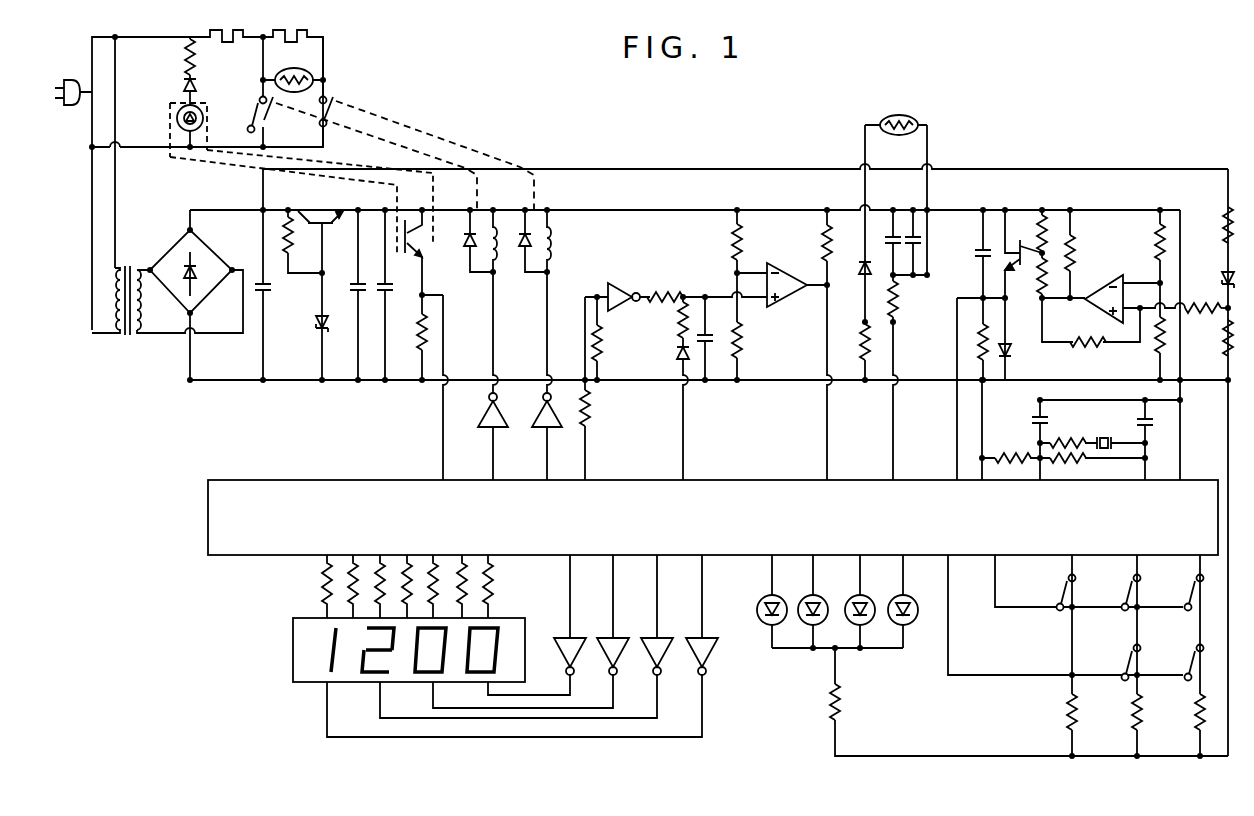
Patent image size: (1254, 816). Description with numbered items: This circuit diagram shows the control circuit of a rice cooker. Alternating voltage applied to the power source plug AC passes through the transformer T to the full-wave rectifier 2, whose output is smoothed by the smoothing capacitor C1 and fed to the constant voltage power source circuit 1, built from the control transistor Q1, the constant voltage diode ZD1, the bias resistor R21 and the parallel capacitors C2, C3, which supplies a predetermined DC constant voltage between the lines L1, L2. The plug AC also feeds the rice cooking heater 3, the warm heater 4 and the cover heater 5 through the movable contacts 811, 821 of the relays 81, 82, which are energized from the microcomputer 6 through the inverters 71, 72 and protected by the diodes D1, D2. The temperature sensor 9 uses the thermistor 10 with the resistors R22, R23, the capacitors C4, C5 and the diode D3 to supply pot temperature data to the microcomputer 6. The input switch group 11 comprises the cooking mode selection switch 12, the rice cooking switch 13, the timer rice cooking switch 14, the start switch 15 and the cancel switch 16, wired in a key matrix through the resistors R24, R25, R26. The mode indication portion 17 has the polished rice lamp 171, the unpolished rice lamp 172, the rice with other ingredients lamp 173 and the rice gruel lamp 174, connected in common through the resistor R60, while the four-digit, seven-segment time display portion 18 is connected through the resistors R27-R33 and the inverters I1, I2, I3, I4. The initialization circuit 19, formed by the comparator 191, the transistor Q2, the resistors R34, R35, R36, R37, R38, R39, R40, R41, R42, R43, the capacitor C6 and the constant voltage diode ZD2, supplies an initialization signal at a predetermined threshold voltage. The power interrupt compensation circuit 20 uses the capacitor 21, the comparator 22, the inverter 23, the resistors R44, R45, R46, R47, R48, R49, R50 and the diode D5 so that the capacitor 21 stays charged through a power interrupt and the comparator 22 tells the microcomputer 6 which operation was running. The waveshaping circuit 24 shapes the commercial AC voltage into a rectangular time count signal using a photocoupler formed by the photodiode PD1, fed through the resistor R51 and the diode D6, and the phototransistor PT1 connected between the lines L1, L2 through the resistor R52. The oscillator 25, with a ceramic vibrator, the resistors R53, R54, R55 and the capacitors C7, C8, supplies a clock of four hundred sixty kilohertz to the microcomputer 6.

The constant voltage power source circuit 1 is at (292, 358).
The full-wave rectifier 2 is at (172, 256).
The rice cooking heater 3 is at (226, 48).
The warm heater 4 is at (263, 44).
The cover heater 5 is at (312, 78).
The microcomputer 6 is at (207, 519).
The temperature sensor 9 is at (944, 187).
The thermistor 10 is at (906, 115).
The input switch group 11 is at (1050, 690).
The cooking mode selection switch 12 is at (1060, 593).
The rice cooking switch 13 is at (1124, 593).
The timer rice cooking switch 14 is at (1124, 663).
The start switch 15 is at (1187, 663).
The cancel switch 16 is at (1187, 593).
The mode indication portion 17 is at (810, 655).
The time display portion 18 is at (292, 676).
The initialization circuit 19 is at (1117, 200).
The power interrupt compensation circuit 20 is at (710, 240).
The capacitor 21 is at (708, 348).
The comparator 22 is at (795, 298).
The inverter 23 is at (620, 284).
The waveshaping circuit 24 is at (230, 168).
The oscillator 25 is at (1034, 412).
The inverter 71 is at (483, 415).
The inverter 72 is at (540, 415).
The relay 81 is at (487, 258).
The relay 82 is at (552, 256).
The movable contact 811 is at (261, 115).
The movable contact 821 is at (340, 99).
The polished rice cooking mode indication lamp 171 is at (907, 628).
The unpolished rice cooking mode indication lamp 172 is at (868, 600).
The rice with other ingredients cooking mode indication lamp 173 is at (822, 600).
The rice gruel cooking mode indication lamp 174 is at (758, 600).
The comparator 191 is at (1091, 306).
The power source plug AC is at (64, 108).
The transformer T is at (128, 338).
The resistor R51 is at (184, 55).
The diode D6 is at (183, 88).
The photodiode PD1 is at (176, 118).
The smoothing capacitor C1 is at (257, 280).
The bias resistor R21 is at (287, 258).
The control transistor Q1 is at (326, 242).
The line L1 is at (360, 207).
The line L2 is at (368, 382).
The constant voltage diode ZD1 is at (320, 336).
The capacitor C2 is at (354, 288).
The capacitor C3 is at (397, 292).
The phototransistor PT1 is at (422, 245).
The resistor R52 is at (417, 352).
The protective diode D1 is at (465, 239).
The protective diode D2 is at (516, 256).
The resistor R44 is at (590, 412).
The resistor R45 is at (616, 338).
The resistor R46 is at (707, 285).
The resistor R47 is at (678, 320).
The diode D5 is at (676, 354).
The resistor R48 is at (743, 235).
The resistor R49 is at (742, 352).
The resistor R50 is at (822, 244).
The resistor R22 is at (858, 341).
The diode D3 is at (858, 280).
The capacitor C4 is at (886, 230).
The capacitor C5 is at (920, 241).
The capacitor C6 is at (977, 253).
The resistor R23 is at (901, 298).
The resistor R34 is at (978, 346).
The transistor Q2 is at (1017, 239).
The resistor R35 is at (1047, 226).
The resistor R36 is at (1036, 293).
The resistor R37 is at (1076, 254).
The resistor R38 is at (1081, 342).
The resistor R39 is at (1156, 240).
The resistor R40 is at (1156, 345).
The resistor R41 is at (1210, 378).
The resistor R42 is at (1222, 214).
The resistor R43 is at (1130, 402).
The constant voltage diode ZD2 is at (1220, 279).
The capacitor C7 is at (1035, 417).
The capacitor C8 is at (1152, 423).
The resistor R53 is at (1009, 428).
The resistor R54 is at (1073, 440).
The resistor R55 is at (1148, 460).
The resistors R27-R33 is at (320, 590).
The inverter I1 is at (558, 636).
The inverter I2 is at (604, 636).
The inverter I3 is at (648, 636).
The inverter I4 is at (695, 636).
The resistor R60 is at (1029, 703).
The resistor R24 is at (1078, 712).
The resistor R25 is at (1143, 712).
The resistor R26 is at (1196, 722).